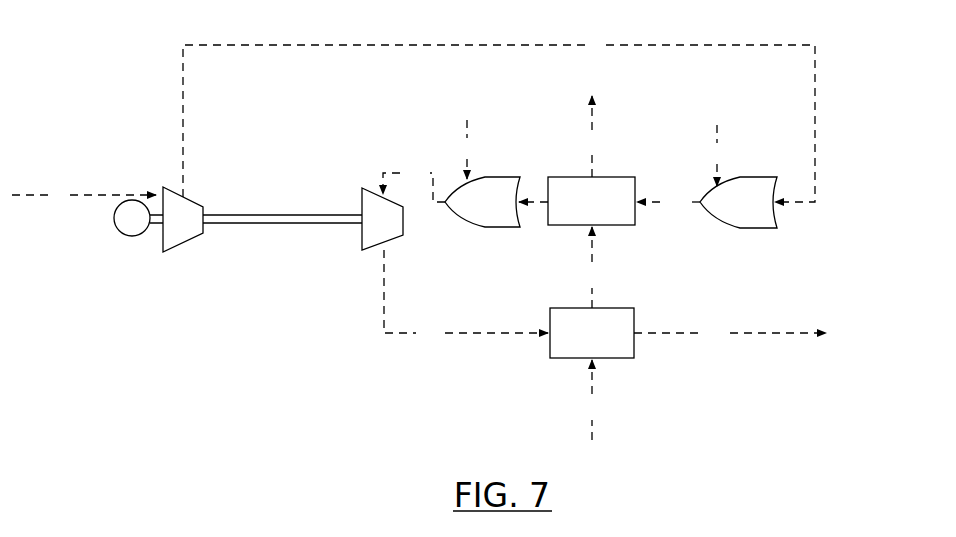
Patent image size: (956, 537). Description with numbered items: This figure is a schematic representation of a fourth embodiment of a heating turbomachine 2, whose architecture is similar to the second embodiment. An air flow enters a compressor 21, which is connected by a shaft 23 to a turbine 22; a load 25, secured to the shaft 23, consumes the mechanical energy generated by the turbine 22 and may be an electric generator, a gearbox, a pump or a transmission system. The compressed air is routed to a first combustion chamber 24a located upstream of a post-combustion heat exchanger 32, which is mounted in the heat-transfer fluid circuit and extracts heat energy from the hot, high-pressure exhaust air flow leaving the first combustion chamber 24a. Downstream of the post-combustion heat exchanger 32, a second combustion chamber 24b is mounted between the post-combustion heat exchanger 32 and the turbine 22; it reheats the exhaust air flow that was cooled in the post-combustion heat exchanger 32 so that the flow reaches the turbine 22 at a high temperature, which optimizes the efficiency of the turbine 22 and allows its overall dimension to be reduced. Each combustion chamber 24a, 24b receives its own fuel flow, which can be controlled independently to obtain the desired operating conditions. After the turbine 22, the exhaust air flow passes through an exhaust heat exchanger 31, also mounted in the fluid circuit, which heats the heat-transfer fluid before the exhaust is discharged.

The heating turbomachine 2 is at (150, 146).
The compressor 21 is at (172, 230).
The turbine 22 is at (371, 230).
The shaft 23 is at (292, 225).
The first combustion chamber 24a is at (725, 213).
The second combustion chamber 24b is at (471, 213).
The load 25 is at (133, 237).
The exhaust heat exchanger 31 is at (579, 344).
The post-combustion heat exchanger 32 is at (580, 213).